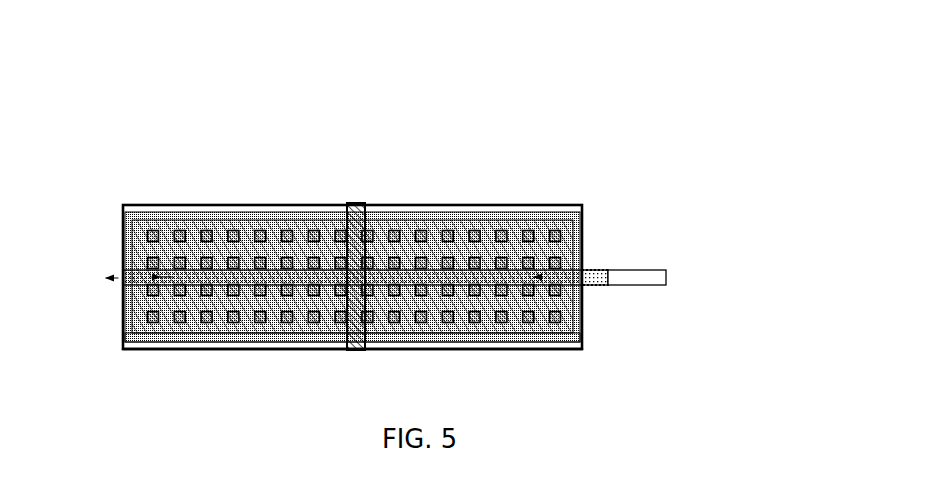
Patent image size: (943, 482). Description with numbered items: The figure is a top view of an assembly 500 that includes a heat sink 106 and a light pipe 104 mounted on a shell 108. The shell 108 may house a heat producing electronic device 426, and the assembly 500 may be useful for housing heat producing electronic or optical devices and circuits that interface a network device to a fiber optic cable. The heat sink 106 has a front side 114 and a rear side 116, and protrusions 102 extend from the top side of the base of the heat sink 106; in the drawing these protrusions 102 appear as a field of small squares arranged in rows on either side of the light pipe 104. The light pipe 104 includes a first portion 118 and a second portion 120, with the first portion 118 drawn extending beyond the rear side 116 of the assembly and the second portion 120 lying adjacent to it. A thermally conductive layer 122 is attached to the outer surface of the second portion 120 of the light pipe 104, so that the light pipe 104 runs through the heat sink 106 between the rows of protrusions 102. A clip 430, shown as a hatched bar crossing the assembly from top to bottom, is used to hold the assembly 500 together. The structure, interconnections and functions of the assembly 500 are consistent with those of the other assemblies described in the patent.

The assembly 500 is at (418, 189).
The protrusions 102 is at (449, 231).
The light pipe 104 is at (704, 273).
The heat sink 106 is at (172, 226).
The shell 108 is at (202, 350).
The front side 114 is at (332, 249).
The rear side 116 is at (592, 231).
The first portion 118 is at (630, 276).
The second portion 120 is at (563, 276).
The thermally conductive layer 122 is at (458, 273).
The heat producing electronic device 426 is at (150, 340).
The clip 430 is at (361, 351).